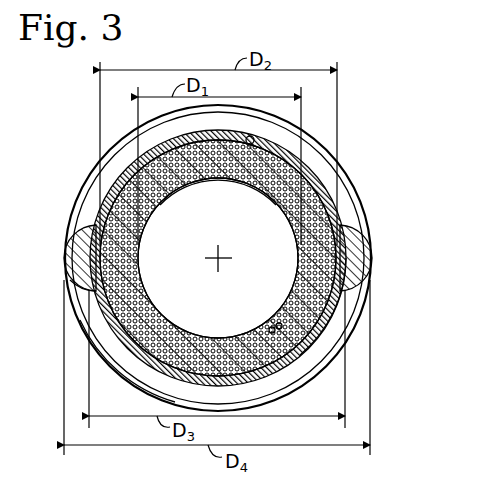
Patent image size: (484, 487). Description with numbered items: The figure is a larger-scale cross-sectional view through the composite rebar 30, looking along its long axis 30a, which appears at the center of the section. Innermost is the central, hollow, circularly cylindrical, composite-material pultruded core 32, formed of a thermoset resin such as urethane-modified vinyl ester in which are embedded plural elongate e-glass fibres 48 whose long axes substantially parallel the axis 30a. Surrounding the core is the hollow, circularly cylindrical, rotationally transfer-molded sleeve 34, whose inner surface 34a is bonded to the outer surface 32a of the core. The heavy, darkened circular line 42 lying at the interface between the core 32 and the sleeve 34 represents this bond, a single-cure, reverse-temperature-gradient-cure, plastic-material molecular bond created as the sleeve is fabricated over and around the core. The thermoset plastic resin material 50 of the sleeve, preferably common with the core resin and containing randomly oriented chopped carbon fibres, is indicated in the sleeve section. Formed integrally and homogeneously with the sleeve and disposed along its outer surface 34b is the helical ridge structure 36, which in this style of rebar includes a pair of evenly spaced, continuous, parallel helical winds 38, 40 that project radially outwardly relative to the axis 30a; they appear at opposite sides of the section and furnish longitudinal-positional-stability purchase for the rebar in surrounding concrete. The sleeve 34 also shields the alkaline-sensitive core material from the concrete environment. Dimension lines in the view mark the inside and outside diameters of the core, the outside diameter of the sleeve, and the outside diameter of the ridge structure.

The rebar 30 is at (352, 151).
The long axis 30a is at (216, 268).
The pultruded core 32 is at (152, 216).
The outer surface of core 32a is at (253, 146).
The sleeve 34 is at (318, 348).
The inner surface of sleeve 34a is at (222, 172).
The outer surface of sleeve 34b is at (338, 322).
The helical ridge structure 36 is at (82, 245).
The helical wind 38 is at (370, 250).
The helical wind 40 is at (82, 258).
The bond 42 is at (286, 363).
The embedded fibres 48 is at (271, 328).
The thermoset plastic resin material 50 is at (133, 350).